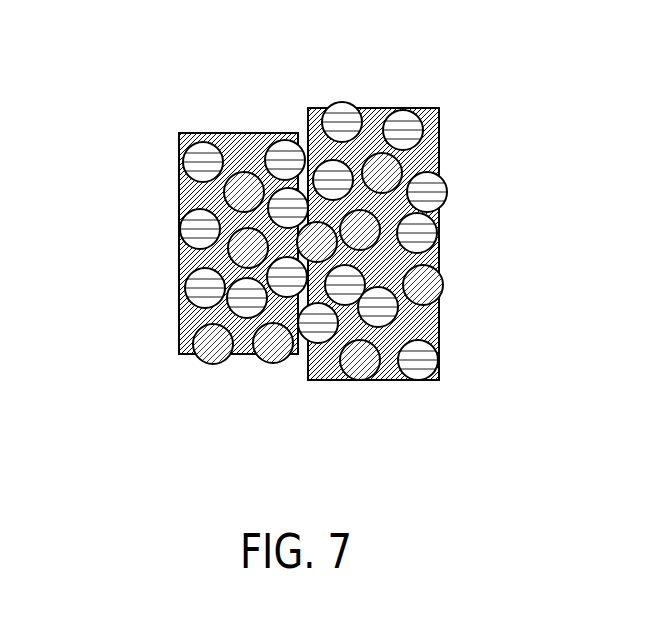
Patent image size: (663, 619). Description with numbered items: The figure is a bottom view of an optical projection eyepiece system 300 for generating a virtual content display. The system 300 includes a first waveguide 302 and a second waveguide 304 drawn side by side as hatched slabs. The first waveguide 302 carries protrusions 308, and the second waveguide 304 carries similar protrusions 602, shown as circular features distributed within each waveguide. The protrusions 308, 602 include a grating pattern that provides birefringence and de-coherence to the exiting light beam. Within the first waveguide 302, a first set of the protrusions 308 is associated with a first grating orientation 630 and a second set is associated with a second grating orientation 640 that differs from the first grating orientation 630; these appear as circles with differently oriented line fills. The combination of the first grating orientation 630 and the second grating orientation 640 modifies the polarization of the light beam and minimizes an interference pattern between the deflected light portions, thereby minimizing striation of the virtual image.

The optical projection eyepiece system 300 is at (136, 104).
The first waveguide 302 is at (193, 247).
The second waveguide 304 is at (417, 196).
The protrusions 308 is at (298, 127).
The protrusions 602 is at (442, 88).
The first grating orientation 630 is at (174, 163).
The second grating orientation 640 is at (212, 374).